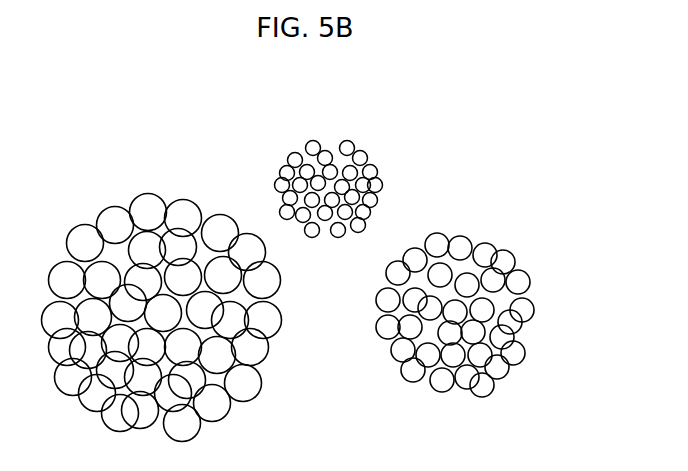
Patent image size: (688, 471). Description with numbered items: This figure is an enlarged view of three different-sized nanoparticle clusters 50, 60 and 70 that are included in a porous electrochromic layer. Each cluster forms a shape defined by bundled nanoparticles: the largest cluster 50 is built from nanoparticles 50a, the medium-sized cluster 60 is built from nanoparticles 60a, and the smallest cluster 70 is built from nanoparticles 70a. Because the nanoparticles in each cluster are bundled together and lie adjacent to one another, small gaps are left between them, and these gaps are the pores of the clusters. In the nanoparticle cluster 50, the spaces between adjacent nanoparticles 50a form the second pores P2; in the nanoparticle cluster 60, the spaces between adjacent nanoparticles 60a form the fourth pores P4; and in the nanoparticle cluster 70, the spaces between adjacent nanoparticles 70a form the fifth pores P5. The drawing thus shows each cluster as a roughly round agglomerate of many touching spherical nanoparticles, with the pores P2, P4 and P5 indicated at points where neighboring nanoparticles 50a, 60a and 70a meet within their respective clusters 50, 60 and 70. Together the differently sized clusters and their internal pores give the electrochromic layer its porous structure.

The nanoparticle cluster 50 is at (90, 200).
The nanoparticles 50a is at (245, 385).
The second pores P2 is at (200, 249).
The nanoparticle cluster 70 is at (378, 140).
The nanoparticles 70a is at (372, 185).
The fifth pores P5 is at (335, 155).
The nanoparticle cluster 60 is at (508, 245).
The nanoparticles 60a is at (525, 308).
The fourth pores P4 is at (462, 352).